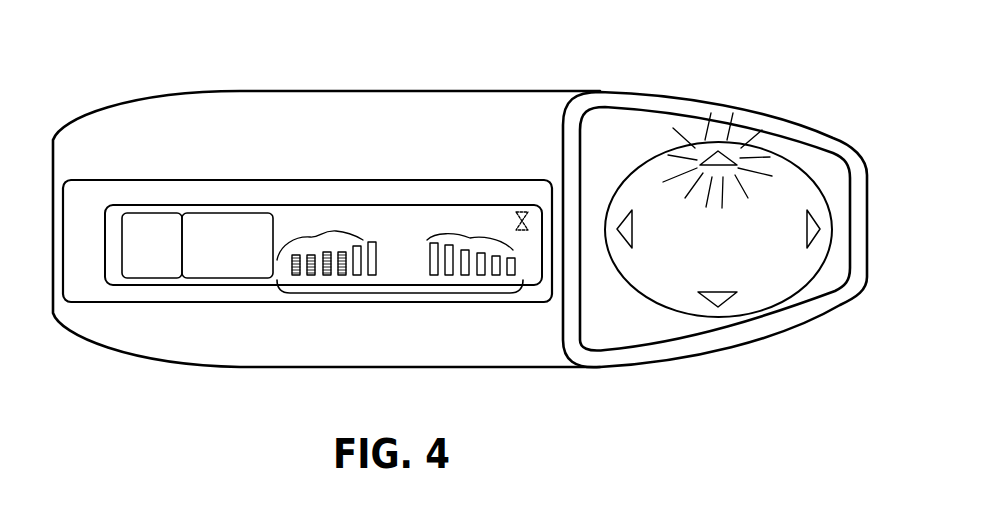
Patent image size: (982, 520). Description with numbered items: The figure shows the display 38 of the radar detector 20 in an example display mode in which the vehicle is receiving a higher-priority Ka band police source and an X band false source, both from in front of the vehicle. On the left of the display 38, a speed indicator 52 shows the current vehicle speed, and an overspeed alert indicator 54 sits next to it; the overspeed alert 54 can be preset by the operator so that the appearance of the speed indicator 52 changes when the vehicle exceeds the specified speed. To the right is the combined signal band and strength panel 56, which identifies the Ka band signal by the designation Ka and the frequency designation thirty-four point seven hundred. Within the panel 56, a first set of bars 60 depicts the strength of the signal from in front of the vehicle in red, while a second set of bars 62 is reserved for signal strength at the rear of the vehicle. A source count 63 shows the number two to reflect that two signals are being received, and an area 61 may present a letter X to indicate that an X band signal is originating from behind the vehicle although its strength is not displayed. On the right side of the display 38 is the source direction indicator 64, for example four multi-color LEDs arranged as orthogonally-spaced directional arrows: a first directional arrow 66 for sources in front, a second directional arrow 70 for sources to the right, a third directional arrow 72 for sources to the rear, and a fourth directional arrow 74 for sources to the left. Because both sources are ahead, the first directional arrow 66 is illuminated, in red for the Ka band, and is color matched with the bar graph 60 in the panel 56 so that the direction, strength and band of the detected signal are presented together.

The radar detector 20 is at (114, 67).
The display 38 is at (619, 176).
The speed indicator 52 is at (226, 212).
The overspeed alert indicator 54 is at (148, 212).
The combined signal band and strength panel 56 is at (403, 293).
The first set of bars 60 is at (319, 237).
The area 61 is at (515, 212).
The second set of bars 62 is at (477, 237).
The source count 63 is at (410, 259).
The source direction indicator 64 is at (814, 172).
The first directional arrow 66 is at (717, 150).
The second directional arrow 70 is at (820, 229).
The third directional arrow 72 is at (718, 291).
The fourth directional arrow 74 is at (632, 229).